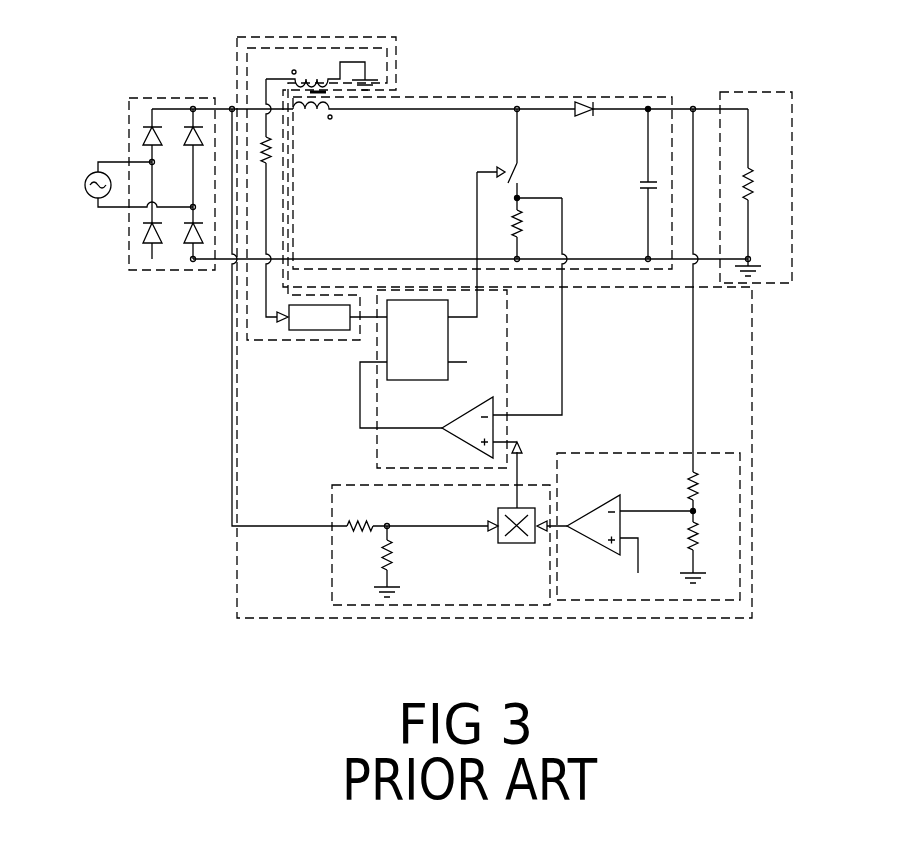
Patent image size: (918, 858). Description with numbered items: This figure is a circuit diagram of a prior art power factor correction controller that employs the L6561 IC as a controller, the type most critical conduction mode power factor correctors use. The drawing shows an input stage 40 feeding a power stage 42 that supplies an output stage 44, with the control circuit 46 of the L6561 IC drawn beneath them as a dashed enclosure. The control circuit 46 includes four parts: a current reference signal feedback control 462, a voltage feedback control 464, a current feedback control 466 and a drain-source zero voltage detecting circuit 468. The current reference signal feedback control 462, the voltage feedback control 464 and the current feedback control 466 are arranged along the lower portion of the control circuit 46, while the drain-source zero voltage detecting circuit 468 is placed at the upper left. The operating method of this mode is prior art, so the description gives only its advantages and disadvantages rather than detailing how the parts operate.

The bridge rectifier 40 is at (129, 109).
The boost converter 42 is at (483, 96).
The load 44 is at (760, 92).
The control circuit 46 is at (752, 376).
The current reference signal feedback control 462 is at (332, 495).
The voltage feedback control 464 is at (622, 453).
The current feedback control 466 is at (508, 366).
The drain-source zero voltage detecting circuit 468 is at (302, 341).